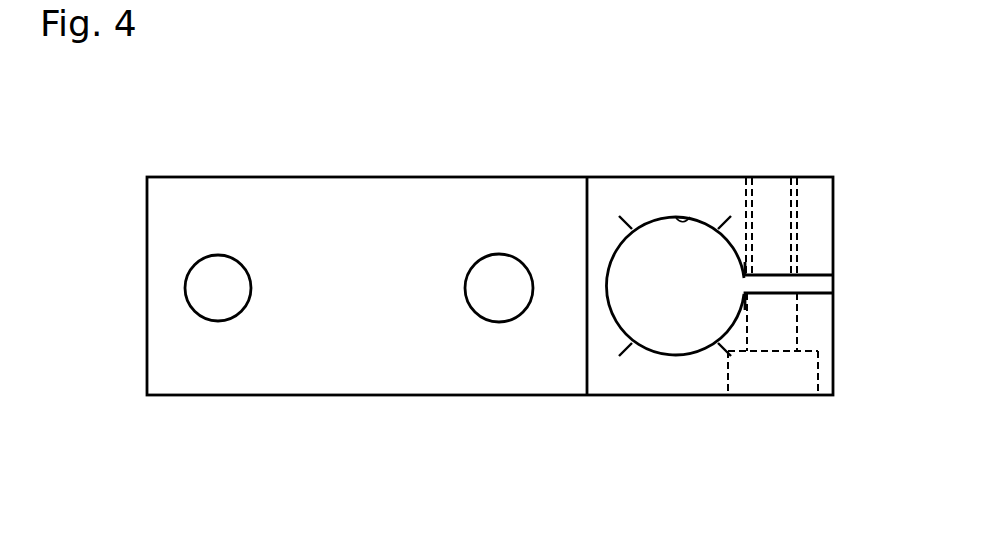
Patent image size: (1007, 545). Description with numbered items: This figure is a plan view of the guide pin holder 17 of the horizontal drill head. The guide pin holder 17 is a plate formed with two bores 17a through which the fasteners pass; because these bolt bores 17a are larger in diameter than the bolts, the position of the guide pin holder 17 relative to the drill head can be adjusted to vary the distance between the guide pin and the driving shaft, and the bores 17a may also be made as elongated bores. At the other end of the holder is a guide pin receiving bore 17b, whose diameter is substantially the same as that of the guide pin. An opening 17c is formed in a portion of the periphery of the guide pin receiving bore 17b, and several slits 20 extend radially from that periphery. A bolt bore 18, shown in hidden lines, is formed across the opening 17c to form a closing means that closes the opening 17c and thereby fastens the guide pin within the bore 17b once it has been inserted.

The guide pin holder 17 is at (160, 177).
The bores 17a is at (196, 256).
The guide pin receiving bore 17b is at (683, 219).
The opening 17c is at (830, 286).
The bolt bore 18 is at (752, 208).
The slits 20 is at (628, 222).